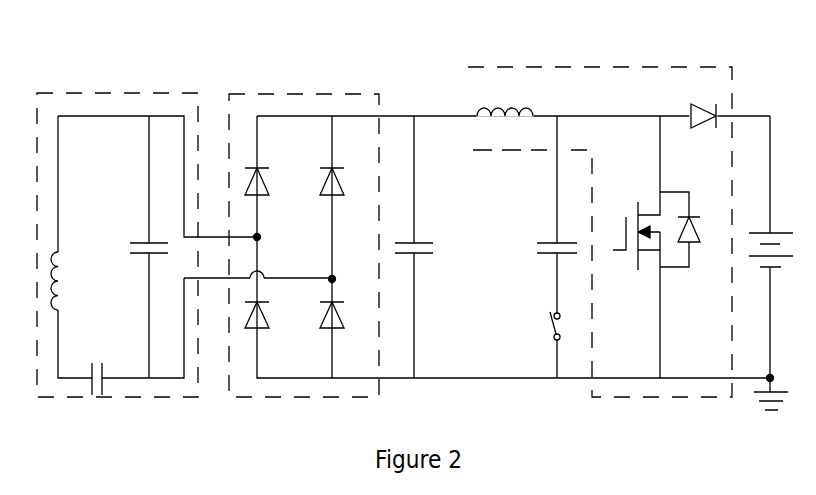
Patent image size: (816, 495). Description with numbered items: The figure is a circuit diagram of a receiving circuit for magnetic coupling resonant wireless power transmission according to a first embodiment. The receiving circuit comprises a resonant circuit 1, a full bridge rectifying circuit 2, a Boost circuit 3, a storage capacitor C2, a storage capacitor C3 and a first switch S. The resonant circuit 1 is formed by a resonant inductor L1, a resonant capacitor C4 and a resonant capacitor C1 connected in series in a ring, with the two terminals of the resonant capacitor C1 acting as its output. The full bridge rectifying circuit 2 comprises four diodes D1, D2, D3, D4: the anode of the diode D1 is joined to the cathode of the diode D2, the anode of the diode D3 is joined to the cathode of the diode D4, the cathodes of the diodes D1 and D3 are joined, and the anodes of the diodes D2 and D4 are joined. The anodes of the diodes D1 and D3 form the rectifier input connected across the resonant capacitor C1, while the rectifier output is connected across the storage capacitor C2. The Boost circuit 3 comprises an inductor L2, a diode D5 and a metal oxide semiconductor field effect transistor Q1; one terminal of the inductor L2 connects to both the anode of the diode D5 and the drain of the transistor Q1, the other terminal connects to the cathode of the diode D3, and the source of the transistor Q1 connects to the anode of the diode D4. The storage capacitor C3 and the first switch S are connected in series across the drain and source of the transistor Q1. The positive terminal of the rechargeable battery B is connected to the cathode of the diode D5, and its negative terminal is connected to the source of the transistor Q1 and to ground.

The resonant circuit 1 is at (118, 93).
The full bridge rectifying circuit 2 is at (303, 94).
The Boost circuit 3 is at (602, 67).
The resonant inductor L1 is at (72, 281).
The resonant capacitor C1 is at (140, 234).
The resonant capacitor C4 is at (99, 364).
The diode D1 is at (271, 173).
The diode D2 is at (271, 310).
The diode D3 is at (346, 173).
The diode D4 is at (346, 310).
The storage capacitor C2 is at (426, 247).
The inductor L2 is at (505, 99).
The storage capacitor C3 is at (547, 247).
The first switch S is at (546, 329).
The metal oxide semiconductor field effect transistor Q1 is at (654, 247).
The diode D5 is at (702, 100).
The rechargeable battery B is at (773, 263).